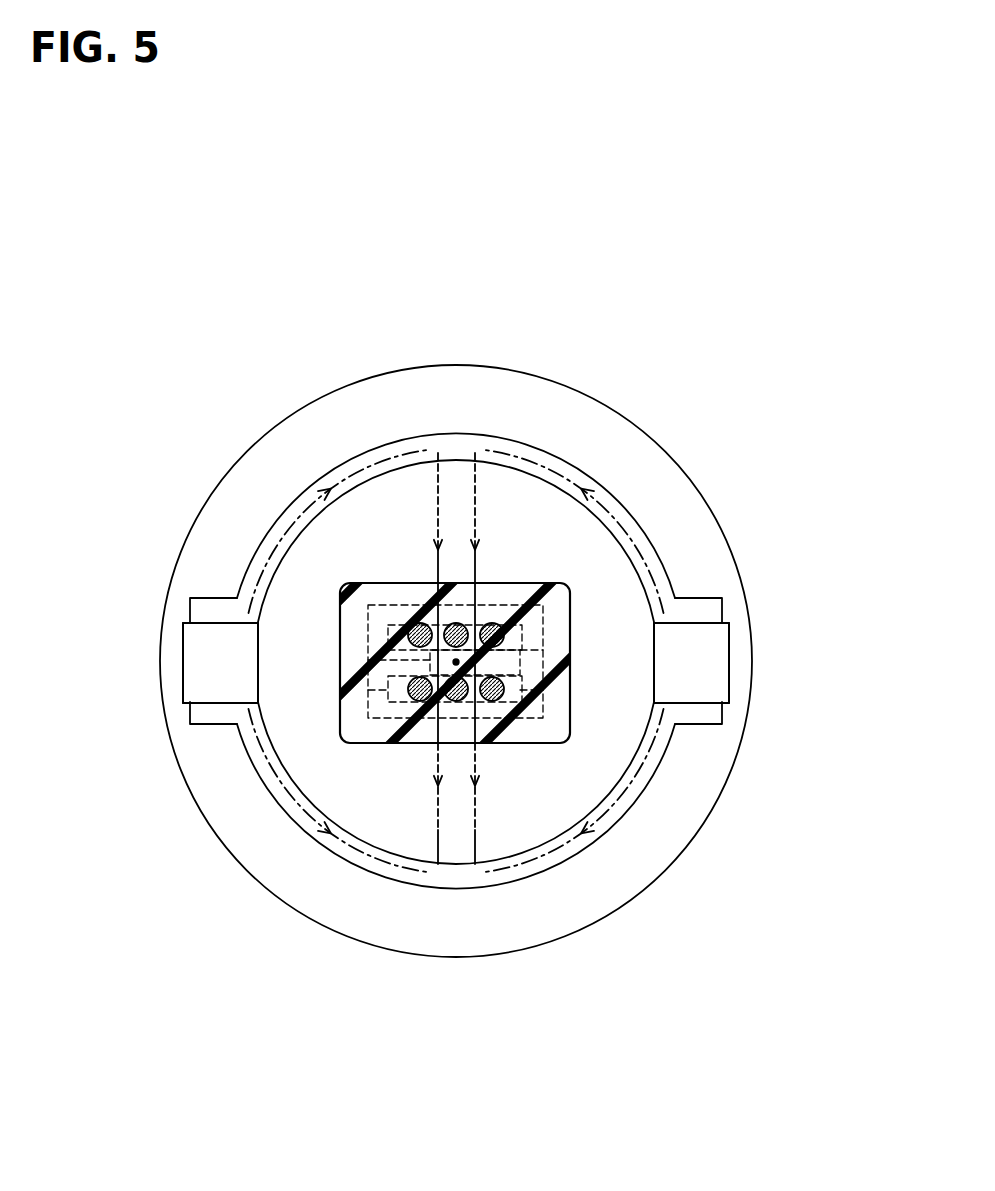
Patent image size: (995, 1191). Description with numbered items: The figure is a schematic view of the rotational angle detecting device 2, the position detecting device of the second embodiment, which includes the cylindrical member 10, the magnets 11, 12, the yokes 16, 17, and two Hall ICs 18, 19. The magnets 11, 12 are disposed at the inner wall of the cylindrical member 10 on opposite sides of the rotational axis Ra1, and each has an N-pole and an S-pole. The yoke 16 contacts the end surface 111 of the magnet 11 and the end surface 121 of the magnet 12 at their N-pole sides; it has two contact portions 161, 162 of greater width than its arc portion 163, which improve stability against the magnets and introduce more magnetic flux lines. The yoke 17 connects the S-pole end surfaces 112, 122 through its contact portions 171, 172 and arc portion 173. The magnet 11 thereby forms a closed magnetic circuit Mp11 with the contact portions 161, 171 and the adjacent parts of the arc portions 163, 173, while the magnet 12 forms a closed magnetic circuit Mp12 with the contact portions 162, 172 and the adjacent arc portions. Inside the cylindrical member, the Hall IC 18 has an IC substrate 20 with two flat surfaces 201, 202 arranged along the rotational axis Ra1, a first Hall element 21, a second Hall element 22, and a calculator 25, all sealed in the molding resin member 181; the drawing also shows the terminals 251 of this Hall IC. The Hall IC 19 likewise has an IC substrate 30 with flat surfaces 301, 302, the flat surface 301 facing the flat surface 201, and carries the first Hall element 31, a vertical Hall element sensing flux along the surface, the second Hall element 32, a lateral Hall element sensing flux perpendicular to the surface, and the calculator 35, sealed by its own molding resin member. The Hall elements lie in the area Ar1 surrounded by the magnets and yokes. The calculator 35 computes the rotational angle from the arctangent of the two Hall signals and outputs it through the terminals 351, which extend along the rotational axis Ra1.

The rotational angle detecting device 2 is at (160, 378).
The cylindrical member 10 is at (619, 468).
The magnet 11 is at (203, 657).
The end surface 111 is at (220, 622).
The end surface 112 is at (217, 704).
The magnet 12 is at (715, 683).
The end surface 121 is at (706, 620).
The end surface 122 is at (722, 722).
The yoke 16 is at (315, 473).
The contact portion 161 is at (221, 612).
The contact portion 162 is at (690, 612).
The arc portion 163 is at (456, 447).
The yoke 17 is at (315, 852).
The contact portion 171 is at (222, 727).
The contact portion 172 is at (694, 727).
The arc portion 173 is at (456, 880).
The Hall IC 18 is at (358, 612).
The molding resin member 181 is at (558, 612).
The Hall IC 19 is at (570, 740).
The IC substrate 20 is at (560, 640).
The flat surface 201 is at (560, 656).
The flat surface 202 is at (530, 630).
The first Hall element 21 is at (362, 645).
The second Hall element 22 is at (470, 582).
The calculator 25 is at (560, 672).
The first coil conductor 251 is at (416, 624).
The IC substrate 30 is at (342, 718).
The flat surface 301 is at (375, 680).
The flat surface 302 is at (366, 744).
The first Hall element 31 is at (565, 690).
The second Hall element 32 is at (457, 748).
The calculator 35 is at (370, 660).
The terminals 351 is at (412, 742).
The area Ar1 is at (424, 520).
The rotational axis Ra1 is at (528, 744).
The closed magnetic circuit Mp11 is at (400, 895).
The closed magnetic circuit Mp12 is at (590, 850).